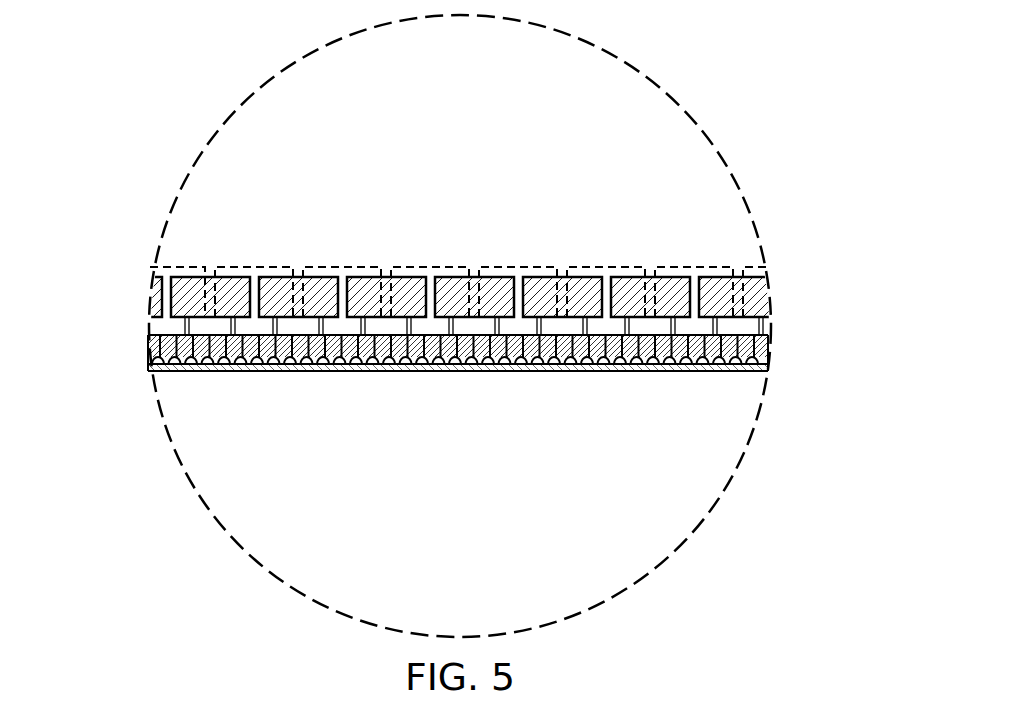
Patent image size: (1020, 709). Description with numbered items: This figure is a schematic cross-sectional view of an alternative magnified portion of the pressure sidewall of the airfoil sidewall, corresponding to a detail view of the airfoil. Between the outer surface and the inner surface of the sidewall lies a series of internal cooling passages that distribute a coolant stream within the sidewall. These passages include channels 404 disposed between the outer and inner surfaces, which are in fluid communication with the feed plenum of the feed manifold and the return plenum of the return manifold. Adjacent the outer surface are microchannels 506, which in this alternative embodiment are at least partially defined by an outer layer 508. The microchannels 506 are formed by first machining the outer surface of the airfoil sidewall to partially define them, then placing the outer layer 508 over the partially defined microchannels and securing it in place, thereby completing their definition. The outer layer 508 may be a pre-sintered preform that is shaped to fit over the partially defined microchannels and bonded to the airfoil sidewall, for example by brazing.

The channels 404 is at (135, 335).
The microchannels 506 is at (135, 370).
The outer layer 508 is at (768, 367).